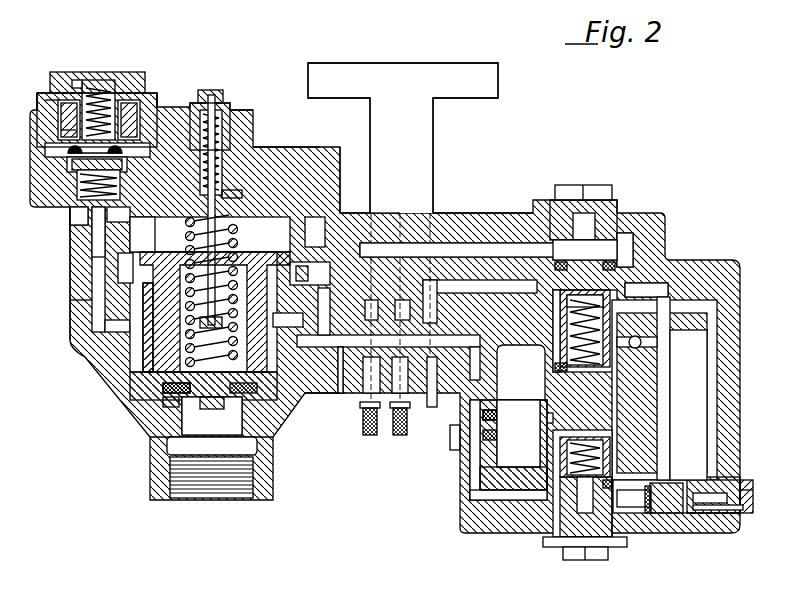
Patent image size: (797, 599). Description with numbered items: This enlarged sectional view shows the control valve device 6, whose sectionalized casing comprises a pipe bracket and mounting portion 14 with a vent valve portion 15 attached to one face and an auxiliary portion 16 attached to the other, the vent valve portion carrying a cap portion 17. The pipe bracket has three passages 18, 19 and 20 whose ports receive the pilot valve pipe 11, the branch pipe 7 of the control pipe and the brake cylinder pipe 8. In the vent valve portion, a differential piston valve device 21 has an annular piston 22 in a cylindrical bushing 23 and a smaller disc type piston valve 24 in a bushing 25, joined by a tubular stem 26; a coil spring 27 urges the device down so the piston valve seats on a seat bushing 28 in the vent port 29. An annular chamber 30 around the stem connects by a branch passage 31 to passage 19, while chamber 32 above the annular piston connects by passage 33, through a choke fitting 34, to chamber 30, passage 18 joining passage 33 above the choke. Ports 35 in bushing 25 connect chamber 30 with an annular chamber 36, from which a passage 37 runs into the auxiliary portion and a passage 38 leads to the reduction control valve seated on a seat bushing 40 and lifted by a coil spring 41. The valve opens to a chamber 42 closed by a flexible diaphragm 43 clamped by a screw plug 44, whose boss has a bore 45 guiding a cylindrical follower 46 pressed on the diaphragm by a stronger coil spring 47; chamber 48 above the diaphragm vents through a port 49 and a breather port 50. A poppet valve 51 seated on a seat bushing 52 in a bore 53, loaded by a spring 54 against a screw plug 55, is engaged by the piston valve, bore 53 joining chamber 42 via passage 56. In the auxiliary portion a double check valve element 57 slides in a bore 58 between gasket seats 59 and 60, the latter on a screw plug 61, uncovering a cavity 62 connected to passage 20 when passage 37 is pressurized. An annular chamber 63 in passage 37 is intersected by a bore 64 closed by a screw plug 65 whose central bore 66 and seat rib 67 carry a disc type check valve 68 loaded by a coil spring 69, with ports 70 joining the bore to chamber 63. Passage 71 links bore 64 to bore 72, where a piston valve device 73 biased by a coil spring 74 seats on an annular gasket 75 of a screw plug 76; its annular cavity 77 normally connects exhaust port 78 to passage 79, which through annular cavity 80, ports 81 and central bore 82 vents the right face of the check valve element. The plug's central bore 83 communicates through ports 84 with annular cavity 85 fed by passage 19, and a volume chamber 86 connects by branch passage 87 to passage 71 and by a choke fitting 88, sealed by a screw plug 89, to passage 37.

The control valve device 6 is at (68, 348).
The branch pipe of the control pipe 7 is at (398, 428).
The brake cylinder pipe 8 is at (429, 402).
The pilot valve pipe 11 is at (367, 430).
The pipe bracket and mounting portion 14 is at (433, 215).
The vent valve portion 15 is at (78, 297).
The auxiliary portion 16 is at (519, 215).
The cap portion 17 is at (283, 160).
The passage 18 is at (370, 237).
The passage 19 is at (80, 146).
The passage 20 is at (463, 250).
The differential piston valve device 21 is at (160, 343).
The annular piston 22 is at (150, 254).
The cylindrical bushing 23 is at (98, 251).
The disc type piston valve 24 is at (178, 422).
The cylindrical bushing 25 is at (165, 400).
The tubular stem 26 is at (248, 336).
The coil spring 27 is at (238, 261).
The seat bushing 28 is at (178, 430).
The vent port 29 is at (222, 478).
The annular chamber 30 is at (150, 312).
The branch passage 31 is at (350, 240).
The chamber 32 is at (318, 215).
The passage 33 is at (305, 172).
The choke fitting 34 is at (310, 272).
The ports 35 is at (147, 363).
The annular chamber 36 is at (306, 396).
The passage 37 is at (333, 347).
The passage 38 is at (118, 270).
The seat bushing 40 is at (85, 183).
The coil spring 41 is at (72, 215).
The chamber 42 is at (88, 160).
The flexible diaphragm 43 is at (70, 133).
The screw plug 44 is at (60, 75).
The bore 45 is at (116, 92).
The cylindrical follower 46 is at (149, 93).
The coil spring 47 is at (98, 88).
The chamber 48 is at (52, 106).
The port 49 is at (42, 96).
The atmospheric exhaust port 50 is at (72, 82).
The poppet valve 51 is at (243, 160).
The seat bushing 52 is at (233, 198).
The bore 53 is at (228, 110).
The spring 54 is at (241, 140).
The screw plug 55 is at (209, 96).
The passage 56 is at (168, 212).
The double check valve element 57 is at (672, 503).
The bore 58 is at (636, 513).
The gasket seat 59 is at (637, 517).
The gasket seat 60 is at (688, 513).
The screw plug 61 is at (750, 483).
The cavity 62 is at (686, 477).
The annular chamber 63 is at (566, 497).
The bore 64 is at (520, 456).
The screw plug 65 is at (585, 560).
The central bore 66 is at (558, 547).
The annular seat rib 67 is at (537, 474).
The disc type check valve 68 is at (512, 463).
The coil spring 69 is at (492, 416).
The ports 70 is at (582, 498).
The passage 71 is at (570, 378).
The bore 72 is at (680, 380).
The piston valve device 73 is at (560, 330).
The coil spring 74 is at (556, 370).
The annular gasket 75 is at (618, 266).
The screw plug 76 is at (569, 192).
The annular cavity 77 is at (567, 360).
The exhaust port 78 is at (642, 343).
The passage 79 is at (710, 323).
The annular cavity 80 is at (717, 523).
The ports 81 is at (715, 508).
The central bore 82 is at (752, 495).
The central bore 83 is at (590, 227).
The ports 84 is at (585, 256).
The annular cavity 85 is at (627, 241).
The volume chamber 86 is at (508, 445).
The branch passage 87 is at (557, 410).
The choke fitting 88 is at (483, 437).
The screw plug 89 is at (450, 434).